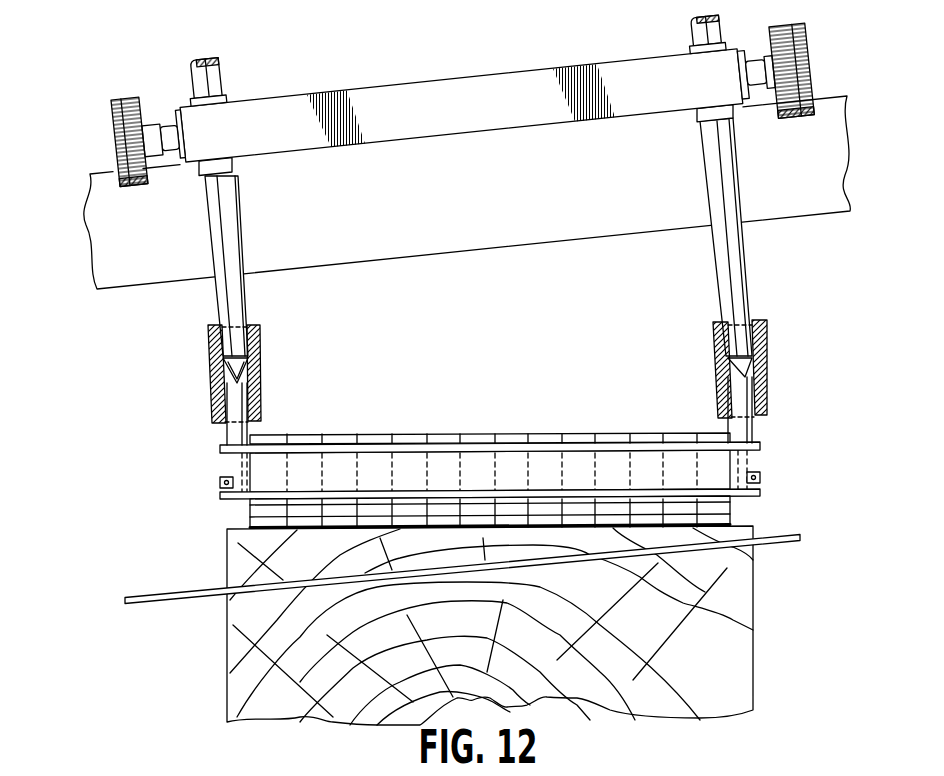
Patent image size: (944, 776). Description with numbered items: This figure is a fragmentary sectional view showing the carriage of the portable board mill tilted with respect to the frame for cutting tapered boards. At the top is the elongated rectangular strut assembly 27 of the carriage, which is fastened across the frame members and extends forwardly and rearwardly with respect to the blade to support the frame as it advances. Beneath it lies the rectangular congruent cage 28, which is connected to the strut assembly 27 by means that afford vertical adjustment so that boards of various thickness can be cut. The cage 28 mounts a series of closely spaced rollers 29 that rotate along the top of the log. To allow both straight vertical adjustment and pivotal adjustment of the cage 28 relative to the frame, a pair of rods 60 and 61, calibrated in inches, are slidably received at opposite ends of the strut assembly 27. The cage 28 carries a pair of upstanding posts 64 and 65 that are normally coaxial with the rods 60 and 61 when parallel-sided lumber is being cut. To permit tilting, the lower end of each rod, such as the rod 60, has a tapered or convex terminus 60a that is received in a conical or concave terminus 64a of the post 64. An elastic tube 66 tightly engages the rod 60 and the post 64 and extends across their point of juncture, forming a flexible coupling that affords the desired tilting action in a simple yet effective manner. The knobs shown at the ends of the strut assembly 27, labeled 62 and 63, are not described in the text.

The strut assembly 27 is at (347, 92).
The cage 28 is at (264, 472).
The rollers 29 is at (453, 436).
The rod 60 is at (237, 219).
The tapered or convex terminus 60a is at (258, 369).
The rod 61 is at (713, 183).
The left adjusting knob 62 is at (158, 130).
The right adjusting knob 63 is at (766, 73).
The post 64 is at (236, 387).
The conical or concave terminus 64a is at (218, 367).
The post 65 is at (762, 403).
The elastic tube 66 is at (263, 393).